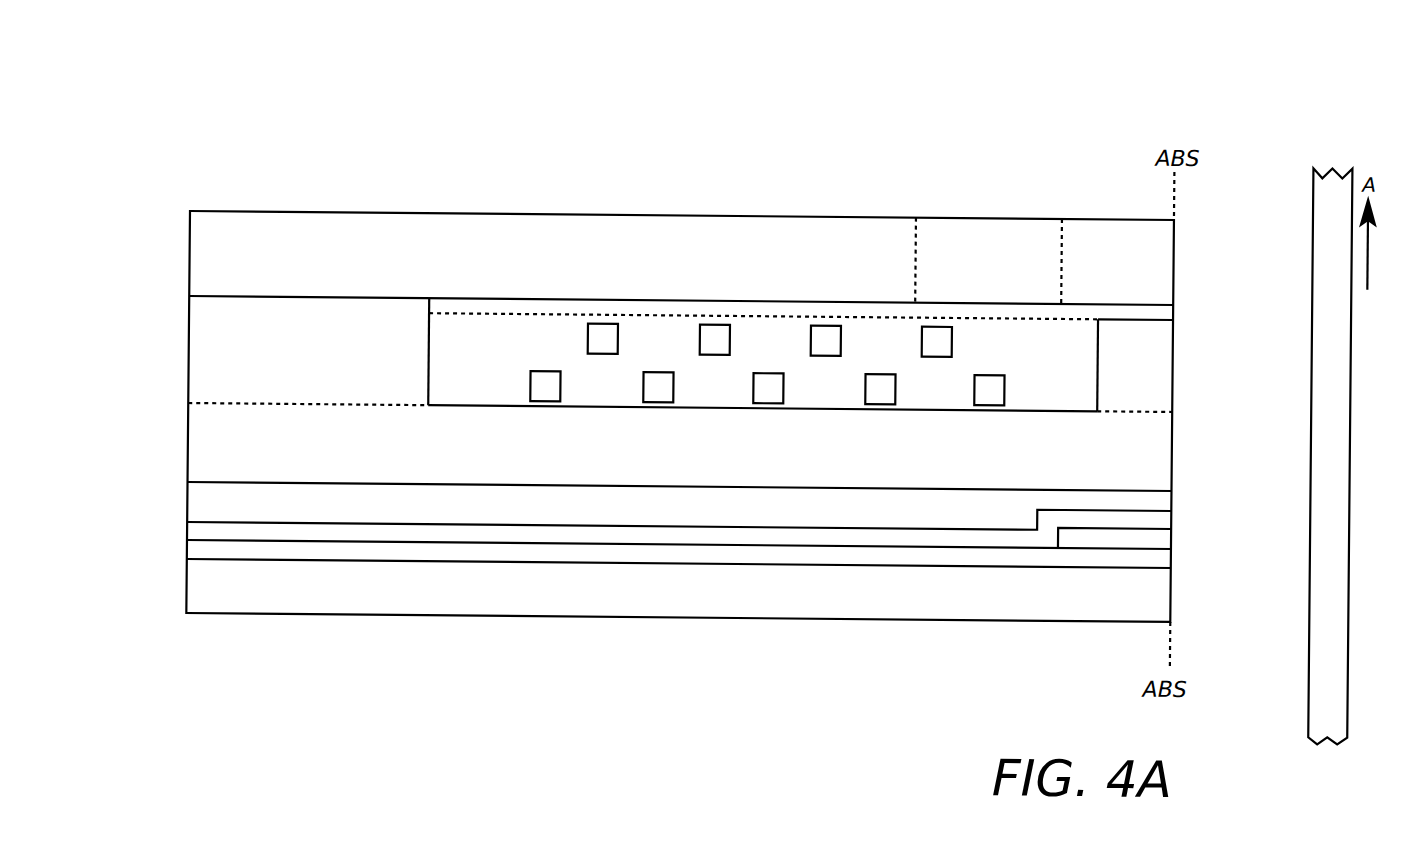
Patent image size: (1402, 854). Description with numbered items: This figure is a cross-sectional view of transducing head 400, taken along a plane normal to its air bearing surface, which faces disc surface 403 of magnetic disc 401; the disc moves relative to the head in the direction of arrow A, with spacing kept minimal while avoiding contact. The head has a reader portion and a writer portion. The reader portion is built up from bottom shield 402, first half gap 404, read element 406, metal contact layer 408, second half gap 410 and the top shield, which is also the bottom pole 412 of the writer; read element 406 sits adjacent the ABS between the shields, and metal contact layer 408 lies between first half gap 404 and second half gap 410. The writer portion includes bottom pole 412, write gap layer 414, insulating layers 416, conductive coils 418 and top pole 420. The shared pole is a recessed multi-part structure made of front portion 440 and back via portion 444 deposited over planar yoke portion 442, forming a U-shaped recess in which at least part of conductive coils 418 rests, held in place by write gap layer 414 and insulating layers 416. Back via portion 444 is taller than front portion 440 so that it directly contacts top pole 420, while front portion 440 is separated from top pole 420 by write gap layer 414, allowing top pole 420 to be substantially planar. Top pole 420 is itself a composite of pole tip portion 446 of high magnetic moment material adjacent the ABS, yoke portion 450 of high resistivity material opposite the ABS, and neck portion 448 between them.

The transducing head 400 is at (266, 145).
The magnetic disc 401 is at (1329, 216).
The disc surface 403 is at (1313, 275).
The bottom shield 402 is at (1158, 599).
The first half gap 404 is at (1146, 558).
The read element 406 is at (1145, 534).
The metal contact layer 408 is at (1144, 512).
The second half gap 410 is at (1018, 514).
The bottom pole 412 is at (239, 381).
The write gap layer 414 is at (1143, 304).
The insulating layers 416 is at (1066, 393).
The conductive coils 418 is at (897, 391).
The top pole 420 is at (232, 257).
The front portion 440 is at (1160, 369).
The yoke portion 442 is at (1155, 461).
The back via portion 444 is at (333, 360).
The pole tip portion 446 is at (1139, 264).
The neck portion 448 is at (1007, 265).
The yoke portion 450 is at (579, 264).